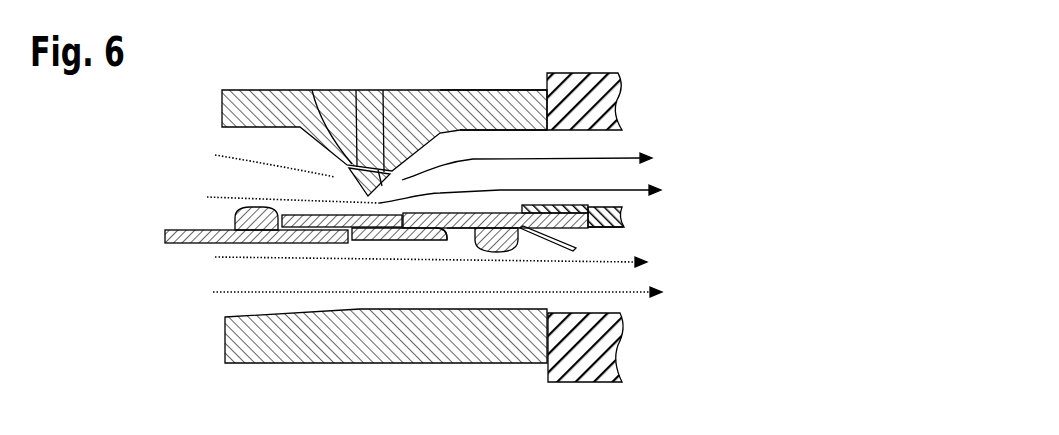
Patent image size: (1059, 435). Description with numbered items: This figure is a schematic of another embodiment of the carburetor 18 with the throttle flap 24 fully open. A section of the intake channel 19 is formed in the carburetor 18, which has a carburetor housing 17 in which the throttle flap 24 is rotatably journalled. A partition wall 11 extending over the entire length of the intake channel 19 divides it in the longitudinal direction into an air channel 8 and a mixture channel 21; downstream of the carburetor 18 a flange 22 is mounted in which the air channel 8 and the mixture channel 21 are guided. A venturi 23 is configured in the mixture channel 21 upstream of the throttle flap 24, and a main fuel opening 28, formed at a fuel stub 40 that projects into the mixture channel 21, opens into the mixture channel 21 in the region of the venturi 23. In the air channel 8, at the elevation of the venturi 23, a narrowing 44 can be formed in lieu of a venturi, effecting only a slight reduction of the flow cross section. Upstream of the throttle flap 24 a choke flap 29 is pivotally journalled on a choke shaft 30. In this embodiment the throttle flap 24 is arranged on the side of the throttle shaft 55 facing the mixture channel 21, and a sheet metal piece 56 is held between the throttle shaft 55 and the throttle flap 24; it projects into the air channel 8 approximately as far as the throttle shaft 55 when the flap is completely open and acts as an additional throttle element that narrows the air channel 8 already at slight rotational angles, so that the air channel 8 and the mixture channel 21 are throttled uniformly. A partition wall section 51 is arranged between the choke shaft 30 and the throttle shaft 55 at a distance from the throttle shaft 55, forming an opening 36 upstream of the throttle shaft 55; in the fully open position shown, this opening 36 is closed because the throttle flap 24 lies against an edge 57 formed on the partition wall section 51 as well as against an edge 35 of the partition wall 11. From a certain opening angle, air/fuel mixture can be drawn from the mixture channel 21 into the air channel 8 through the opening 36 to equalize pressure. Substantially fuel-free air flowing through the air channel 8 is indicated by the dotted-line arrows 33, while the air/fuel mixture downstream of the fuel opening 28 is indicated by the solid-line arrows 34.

The air channel 8 is at (614, 244).
The partition wall 11 is at (624, 213).
The carburetor housing 17 is at (473, 90).
The carburetor 18 is at (226, 70).
The intake channel 19 is at (240, 268).
The mixture channel 21 is at (610, 177).
The flange 22 is at (585, 73).
The venturi 23 is at (318, 90).
The throttle flap 24 is at (440, 213).
The main fuel opening 28 is at (383, 90).
The choke flap 29 is at (165, 230).
The choke shaft 30 is at (237, 221).
The arrows (fuel-free air flow) 33 is at (612, 293).
The arrows (air/fuel mixture flow) 34 is at (605, 158).
The edge 35 is at (540, 210).
The opening 36 is at (462, 235).
The fuel stub 40 is at (355, 90).
The narrowing 44 is at (360, 310).
The partition wall section 51 is at (373, 240).
The throttle shaft 55 is at (498, 250).
The sheet metal piece 56 is at (552, 242).
The edge 57 is at (422, 240).